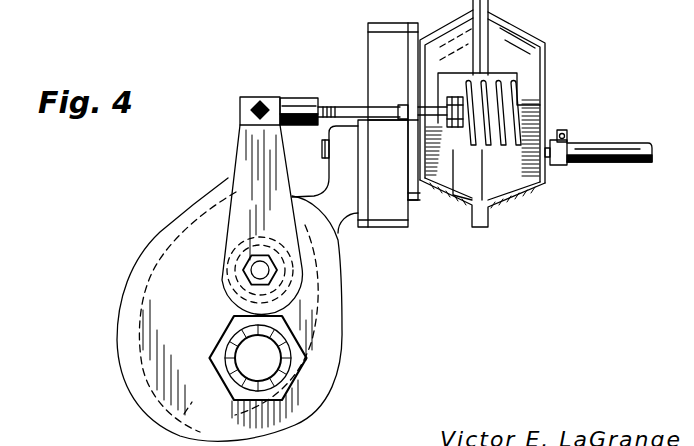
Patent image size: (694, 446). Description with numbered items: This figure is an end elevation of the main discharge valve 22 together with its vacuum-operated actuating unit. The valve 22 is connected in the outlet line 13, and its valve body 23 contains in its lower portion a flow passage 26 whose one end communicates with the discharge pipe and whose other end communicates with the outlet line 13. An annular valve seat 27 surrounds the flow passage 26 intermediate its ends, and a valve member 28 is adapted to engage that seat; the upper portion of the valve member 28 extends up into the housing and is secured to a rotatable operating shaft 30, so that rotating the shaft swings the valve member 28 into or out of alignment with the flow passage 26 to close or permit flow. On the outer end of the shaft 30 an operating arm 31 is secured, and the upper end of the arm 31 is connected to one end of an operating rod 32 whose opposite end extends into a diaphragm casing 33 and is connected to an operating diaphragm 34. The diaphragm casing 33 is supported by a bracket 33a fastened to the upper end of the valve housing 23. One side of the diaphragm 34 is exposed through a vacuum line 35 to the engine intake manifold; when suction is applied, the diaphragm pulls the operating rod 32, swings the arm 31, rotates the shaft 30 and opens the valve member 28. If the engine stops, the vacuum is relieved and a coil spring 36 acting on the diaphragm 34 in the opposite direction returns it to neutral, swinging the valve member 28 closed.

The outlet line 13 is at (302, 392).
The main discharge valve 22 is at (400, 238).
The valve body 23 is at (343, 343).
The flow passage 26 is at (182, 14).
The annular valve seat 27 is at (258, 0).
The valve member 28 is at (184, 414).
The operating shaft 30 is at (268, 274).
The operating arm 31 is at (236, 178).
The operating rod 32 is at (345, 107).
The diaphragm casing 33 is at (455, 22).
The bracket 33a is at (418, 200).
The operating diaphragm 34 is at (503, 190).
The vacuum line 35 is at (598, 163).
The coil spring 36 is at (543, 96).